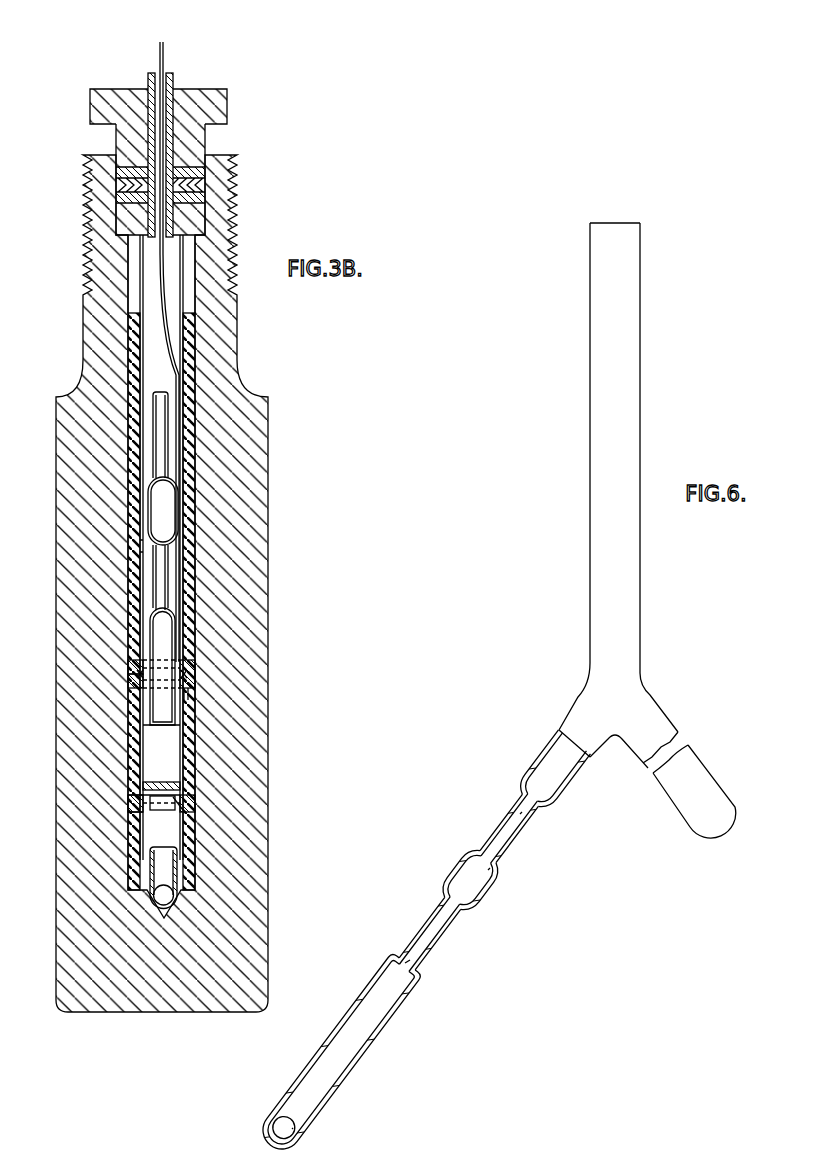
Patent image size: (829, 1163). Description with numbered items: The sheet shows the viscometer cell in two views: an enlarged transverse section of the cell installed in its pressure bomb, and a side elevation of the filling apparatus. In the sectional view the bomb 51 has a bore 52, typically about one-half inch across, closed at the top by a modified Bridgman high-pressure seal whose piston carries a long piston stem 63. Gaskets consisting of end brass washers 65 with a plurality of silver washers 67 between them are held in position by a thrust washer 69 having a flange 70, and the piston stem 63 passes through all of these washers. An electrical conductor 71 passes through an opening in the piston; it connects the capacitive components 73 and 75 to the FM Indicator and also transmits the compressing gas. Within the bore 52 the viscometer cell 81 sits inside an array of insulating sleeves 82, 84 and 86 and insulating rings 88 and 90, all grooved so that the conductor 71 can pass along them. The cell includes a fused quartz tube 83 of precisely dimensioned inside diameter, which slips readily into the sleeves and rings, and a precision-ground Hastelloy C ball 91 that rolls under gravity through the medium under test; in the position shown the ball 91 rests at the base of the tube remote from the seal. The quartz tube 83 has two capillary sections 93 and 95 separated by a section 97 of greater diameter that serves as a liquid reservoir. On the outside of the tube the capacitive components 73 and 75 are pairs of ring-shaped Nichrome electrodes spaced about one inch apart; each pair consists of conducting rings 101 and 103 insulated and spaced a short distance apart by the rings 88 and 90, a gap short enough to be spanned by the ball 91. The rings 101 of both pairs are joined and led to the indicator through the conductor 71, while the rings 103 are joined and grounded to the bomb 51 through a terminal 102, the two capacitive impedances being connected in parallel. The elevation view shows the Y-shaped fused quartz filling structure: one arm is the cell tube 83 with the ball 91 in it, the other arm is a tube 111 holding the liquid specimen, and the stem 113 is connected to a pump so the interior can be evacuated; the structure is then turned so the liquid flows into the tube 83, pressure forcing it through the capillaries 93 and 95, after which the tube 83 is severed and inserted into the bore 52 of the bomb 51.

In FIG. 3B, the bomb 51 is at (254, 453).
In FIG. 3B, the bore 52 is at (127, 283).
In FIG. 3B, the piston stem 63 is at (173, 80).
In FIG. 3B, the brass washers 65 is at (200, 196).
In FIG. 3B, the silver washers 67 is at (120, 196).
In FIG. 3B, the thrust washer 69 is at (200, 140).
In FIG. 3B, the flange 70 is at (218, 104).
In FIG. 3B, the electrical conductor 71 is at (163, 53).
In FIG. 3B, the capacitive component 73 is at (194, 686).
In FIG. 3B, the capacitive component 75 is at (180, 810).
In FIG. 3B, the viscometer cell 81 is at (173, 745).
In FIG. 3B, the insulating sleeve 82 is at (150, 849).
In FIG. 3B, the quartz tube 83 is at (162, 558).
In FIG. 6, the quartz tube 83 is at (518, 581).
In FIG. 3B, the insulating sleeve 84 is at (192, 770).
In FIG. 3B, the insulating sleeve 86 is at (142, 545).
In FIG. 3B, the insulating ring 88 is at (138, 797).
In FIG. 3B, the insulating ring 90 is at (188, 677).
In FIG. 3B, the ball 91 is at (170, 895).
In FIG. 3B, the capillary section 93 is at (156, 428).
In FIG. 3B, the capillary section 95 is at (153, 588).
In FIG. 3B, the reservoir section 97 is at (160, 510).
In FIG. 3B, the conducting ring 101 is at (160, 652).
In FIG. 3B, the terminal 102 is at (140, 232).
In FIG. 3B, the conducting ring 103 is at (156, 694).
In FIG. 6, the tube 111 is at (697, 773).
In FIG. 6, the stem 113 is at (632, 341).